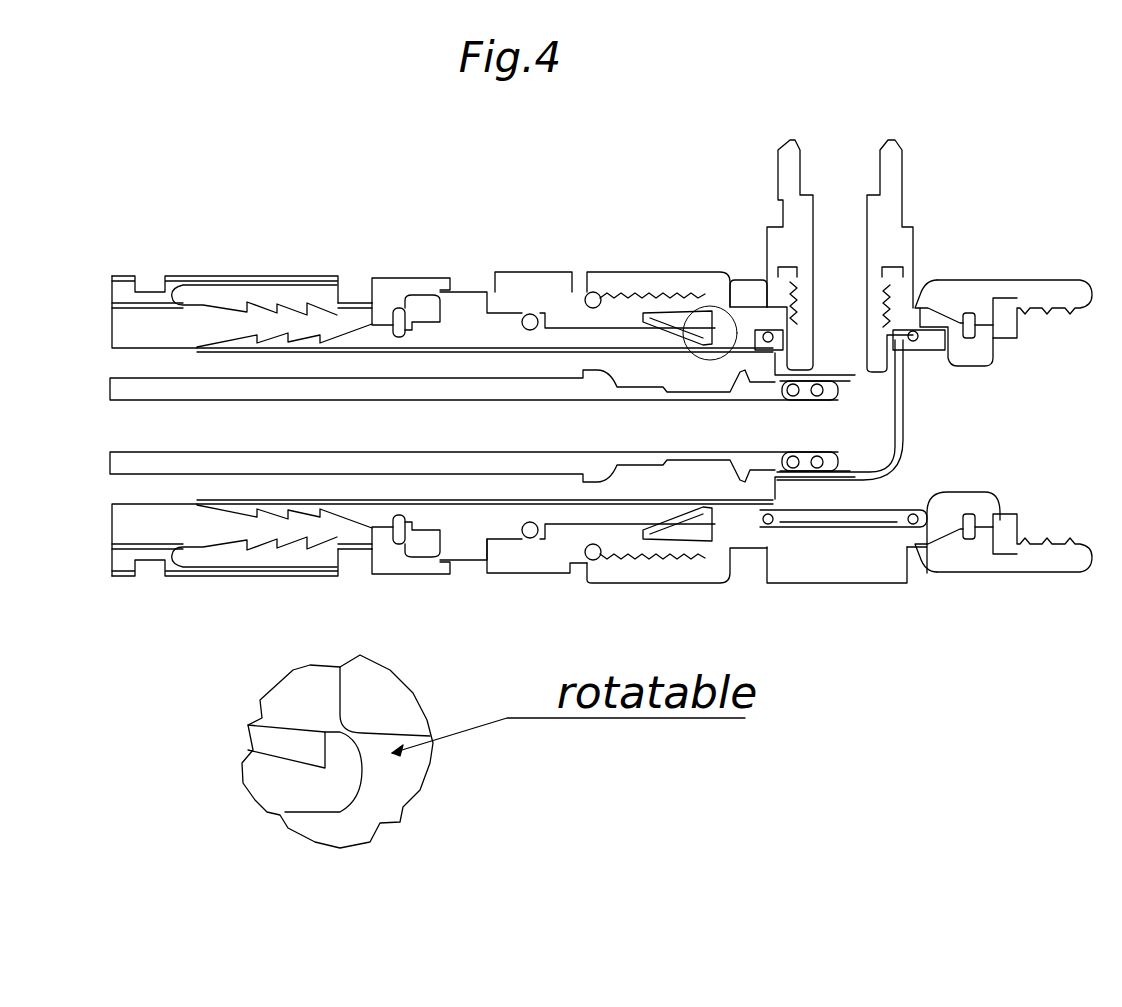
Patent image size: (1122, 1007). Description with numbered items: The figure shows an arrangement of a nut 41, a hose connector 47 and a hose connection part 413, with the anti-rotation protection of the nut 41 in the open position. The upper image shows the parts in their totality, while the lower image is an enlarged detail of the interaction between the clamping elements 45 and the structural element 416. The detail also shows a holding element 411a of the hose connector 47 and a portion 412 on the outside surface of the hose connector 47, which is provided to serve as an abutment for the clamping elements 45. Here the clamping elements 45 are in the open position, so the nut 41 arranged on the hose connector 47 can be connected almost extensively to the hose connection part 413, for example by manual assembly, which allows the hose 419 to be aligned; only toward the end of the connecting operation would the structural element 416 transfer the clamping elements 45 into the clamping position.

The hose 419 is at (125, 277).
The hose connector 47 is at (455, 317).
The nut 41 is at (518, 285).
The clamping elements 45 is at (653, 313).
The structural element 416 is at (717, 307).
The hose connection part 413 is at (903, 315).
The portion on the outside surface of the hose connector 412 is at (295, 798).
The holding element 411a is at (342, 765).